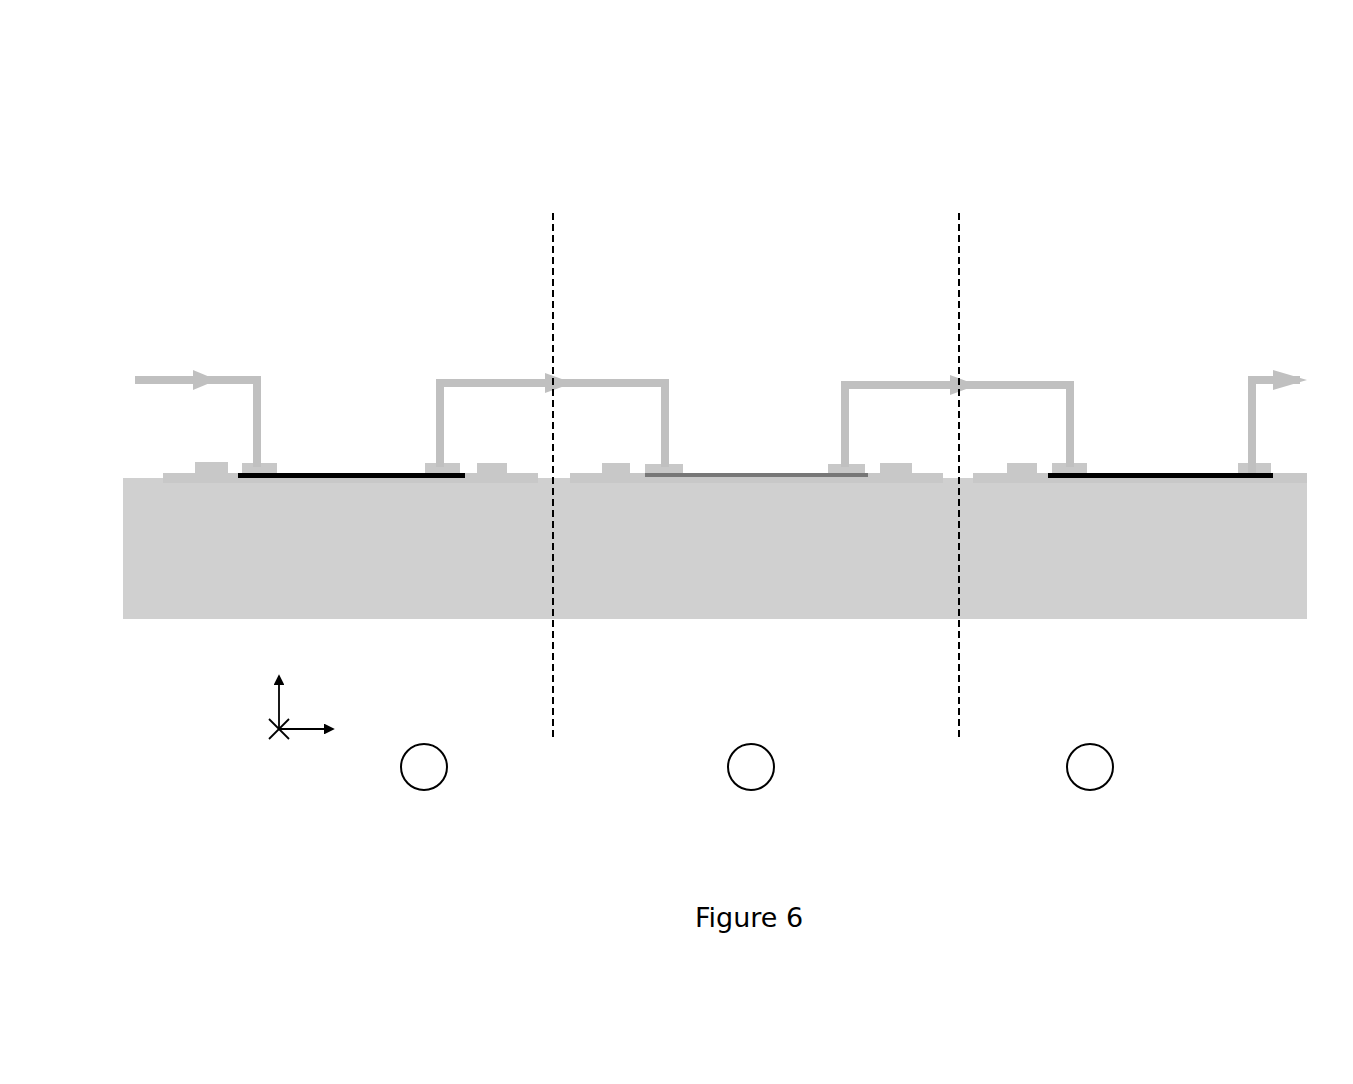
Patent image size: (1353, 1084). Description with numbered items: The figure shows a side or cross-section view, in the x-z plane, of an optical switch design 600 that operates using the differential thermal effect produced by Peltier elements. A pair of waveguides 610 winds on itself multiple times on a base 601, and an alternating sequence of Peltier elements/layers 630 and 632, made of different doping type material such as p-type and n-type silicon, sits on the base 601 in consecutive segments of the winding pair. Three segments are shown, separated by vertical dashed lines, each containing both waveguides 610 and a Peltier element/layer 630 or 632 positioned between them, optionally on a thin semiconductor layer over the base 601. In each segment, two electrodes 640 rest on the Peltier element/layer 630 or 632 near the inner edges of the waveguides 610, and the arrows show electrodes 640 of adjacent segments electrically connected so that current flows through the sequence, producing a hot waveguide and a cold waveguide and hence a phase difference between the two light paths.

The optical switch design 600 is at (232, 169).
The base 601 is at (1167, 587).
The waveguides 610 is at (214, 473).
The Peltier element/layer 630 is at (362, 468).
The Peltier element/layer 632 is at (761, 464).
The electrodes 640 is at (420, 463).